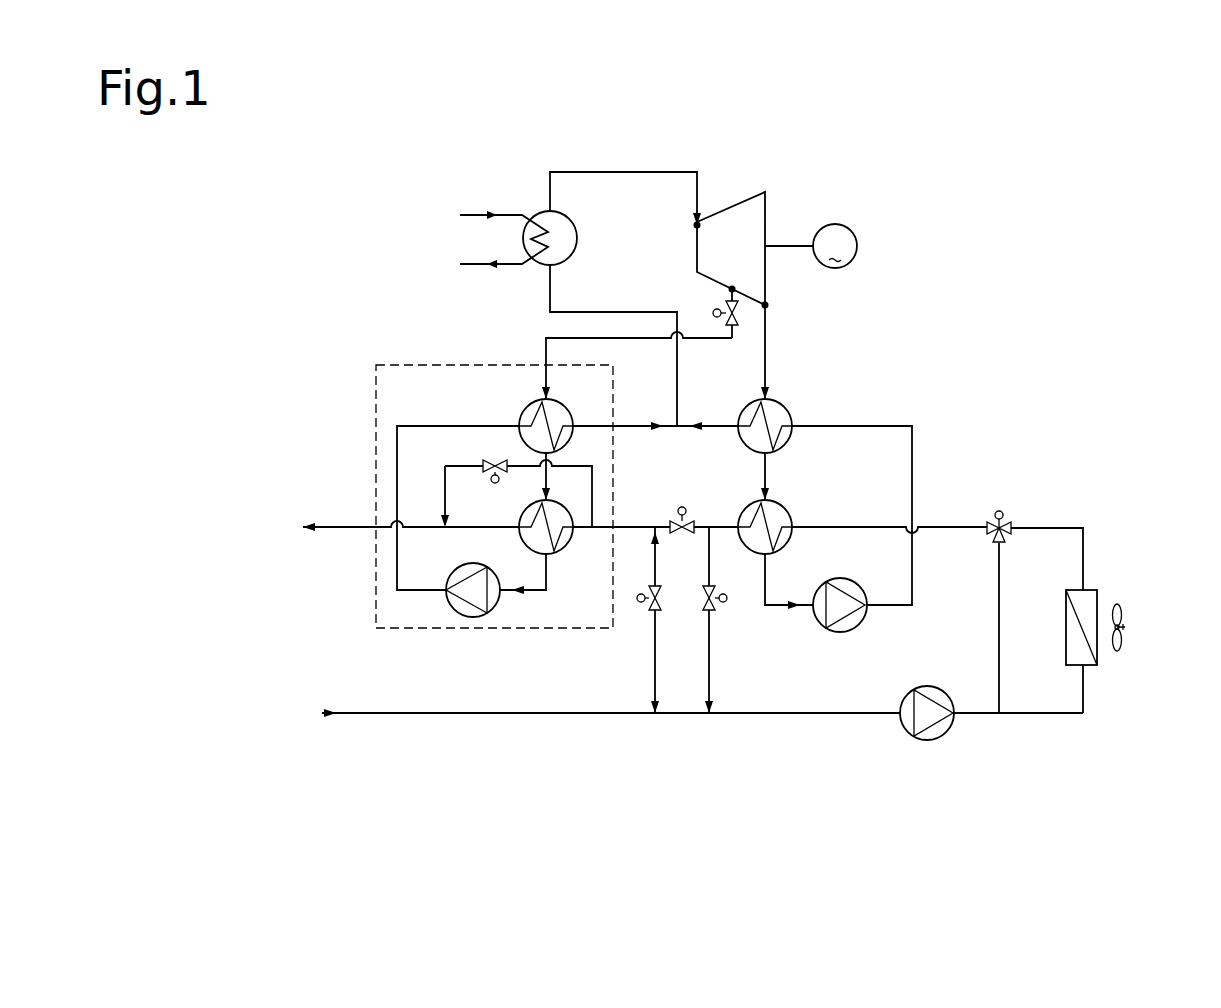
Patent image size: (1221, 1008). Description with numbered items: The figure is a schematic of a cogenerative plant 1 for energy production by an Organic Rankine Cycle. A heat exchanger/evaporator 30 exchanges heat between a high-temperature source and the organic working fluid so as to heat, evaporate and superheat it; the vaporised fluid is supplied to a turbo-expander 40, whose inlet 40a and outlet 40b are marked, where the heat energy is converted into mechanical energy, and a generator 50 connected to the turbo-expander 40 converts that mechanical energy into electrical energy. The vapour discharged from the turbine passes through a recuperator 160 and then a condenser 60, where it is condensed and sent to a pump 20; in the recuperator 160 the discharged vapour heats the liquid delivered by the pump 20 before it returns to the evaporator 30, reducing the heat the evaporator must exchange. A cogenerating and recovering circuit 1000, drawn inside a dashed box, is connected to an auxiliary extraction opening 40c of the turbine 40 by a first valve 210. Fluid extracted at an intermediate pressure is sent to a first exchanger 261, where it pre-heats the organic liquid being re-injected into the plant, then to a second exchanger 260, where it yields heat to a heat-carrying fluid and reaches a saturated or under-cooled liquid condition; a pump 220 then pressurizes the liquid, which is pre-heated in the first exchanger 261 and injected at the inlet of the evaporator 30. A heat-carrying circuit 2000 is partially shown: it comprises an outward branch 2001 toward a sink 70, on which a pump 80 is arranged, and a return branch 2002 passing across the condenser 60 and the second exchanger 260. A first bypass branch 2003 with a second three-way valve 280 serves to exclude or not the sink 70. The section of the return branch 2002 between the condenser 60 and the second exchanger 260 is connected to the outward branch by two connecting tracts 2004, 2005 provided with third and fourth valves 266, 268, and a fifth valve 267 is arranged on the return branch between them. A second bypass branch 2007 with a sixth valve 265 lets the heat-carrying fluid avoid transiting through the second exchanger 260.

The plant 1 is at (1012, 308).
The heat exchanger/evaporator 30 is at (562, 214).
The turbo-expander 40 is at (767, 208).
The turbine inlet 40a is at (693, 223).
The turbine outlet 40b is at (768, 305).
The auxiliary opening 40c is at (728, 291).
The generator 50 is at (855, 232).
The recuperator 160 is at (790, 406).
The condenser 60 is at (752, 553).
The pump 20 is at (853, 630).
The sink 70 is at (1115, 598).
The pump 80 is at (942, 740).
The first valve 210 is at (738, 312).
The pump 220 is at (452, 612).
The second exchanger 260 is at (556, 553).
The first exchanger 261 is at (517, 442).
The sixth valve 265 is at (490, 478).
The third valve 266 is at (715, 613).
The fifth valve 267 is at (676, 518).
The fourth valve 268 is at (648, 613).
The second three-way valve 280 is at (1005, 514).
The cogenerating and recovering circuit 1000 is at (370, 371).
The heat-carrying circuit 2000 is at (1077, 509).
The outward branch 2001 is at (857, 714).
The return branch 2002 is at (950, 527).
The first bypass branch 2003 is at (998, 647).
The connecting tract 2004 is at (712, 682).
The connecting tract 2005 is at (653, 682).
The second bypass branch 2007 is at (445, 488).